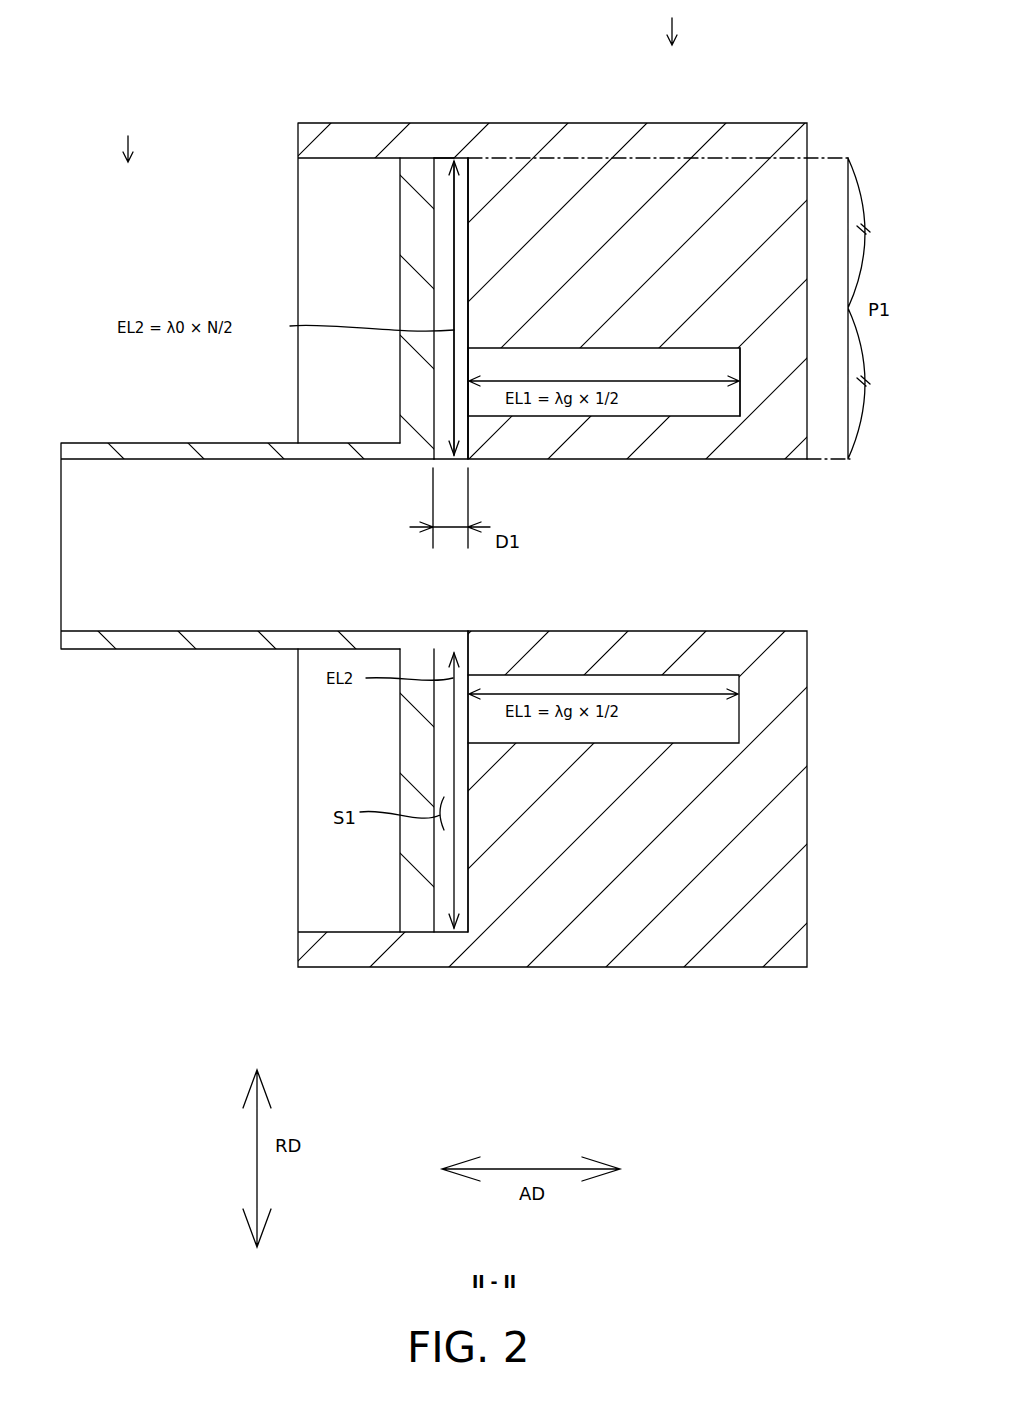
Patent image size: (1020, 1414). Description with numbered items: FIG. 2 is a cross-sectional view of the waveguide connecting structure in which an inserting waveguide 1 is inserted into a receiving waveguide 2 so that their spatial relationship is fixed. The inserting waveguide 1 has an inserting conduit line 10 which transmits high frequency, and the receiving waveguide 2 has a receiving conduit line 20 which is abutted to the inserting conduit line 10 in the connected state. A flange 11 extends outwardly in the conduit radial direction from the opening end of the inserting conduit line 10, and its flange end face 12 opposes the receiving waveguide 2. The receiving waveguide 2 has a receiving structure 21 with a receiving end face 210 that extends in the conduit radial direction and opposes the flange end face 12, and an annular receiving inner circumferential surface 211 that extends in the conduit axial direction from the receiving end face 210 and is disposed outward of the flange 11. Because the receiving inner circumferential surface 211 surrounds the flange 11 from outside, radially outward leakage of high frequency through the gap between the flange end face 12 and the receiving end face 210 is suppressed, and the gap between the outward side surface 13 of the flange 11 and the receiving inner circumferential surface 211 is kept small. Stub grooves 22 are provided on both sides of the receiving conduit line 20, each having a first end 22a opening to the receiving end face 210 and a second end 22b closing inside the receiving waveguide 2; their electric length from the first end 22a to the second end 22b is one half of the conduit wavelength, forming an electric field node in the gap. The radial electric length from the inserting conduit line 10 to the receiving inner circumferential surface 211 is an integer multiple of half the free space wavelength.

The inserting waveguide 1 is at (127, 138).
The receiving waveguide 2 is at (671, 22).
The inserting conduit line 10 is at (198, 534).
The flange 11 is at (410, 285).
The flange end face 12 is at (440, 232).
The outward side surface of the flange 13 is at (448, 160).
The receiving conduit line 20 is at (697, 523).
The receiving structure 21 is at (540, 46).
The receiving end face 210 is at (470, 180).
The receiving inner circumferential surface 211 is at (452, 160).
The stub groove 22 is at (566, 351).
The first end of the stub groove 22a is at (472, 355).
The second end of the stub groove 22b is at (737, 355).